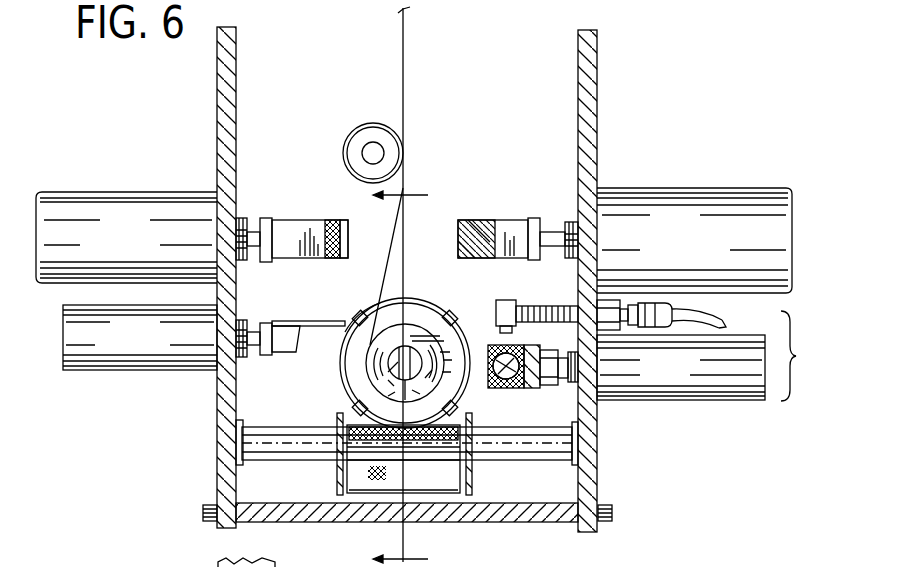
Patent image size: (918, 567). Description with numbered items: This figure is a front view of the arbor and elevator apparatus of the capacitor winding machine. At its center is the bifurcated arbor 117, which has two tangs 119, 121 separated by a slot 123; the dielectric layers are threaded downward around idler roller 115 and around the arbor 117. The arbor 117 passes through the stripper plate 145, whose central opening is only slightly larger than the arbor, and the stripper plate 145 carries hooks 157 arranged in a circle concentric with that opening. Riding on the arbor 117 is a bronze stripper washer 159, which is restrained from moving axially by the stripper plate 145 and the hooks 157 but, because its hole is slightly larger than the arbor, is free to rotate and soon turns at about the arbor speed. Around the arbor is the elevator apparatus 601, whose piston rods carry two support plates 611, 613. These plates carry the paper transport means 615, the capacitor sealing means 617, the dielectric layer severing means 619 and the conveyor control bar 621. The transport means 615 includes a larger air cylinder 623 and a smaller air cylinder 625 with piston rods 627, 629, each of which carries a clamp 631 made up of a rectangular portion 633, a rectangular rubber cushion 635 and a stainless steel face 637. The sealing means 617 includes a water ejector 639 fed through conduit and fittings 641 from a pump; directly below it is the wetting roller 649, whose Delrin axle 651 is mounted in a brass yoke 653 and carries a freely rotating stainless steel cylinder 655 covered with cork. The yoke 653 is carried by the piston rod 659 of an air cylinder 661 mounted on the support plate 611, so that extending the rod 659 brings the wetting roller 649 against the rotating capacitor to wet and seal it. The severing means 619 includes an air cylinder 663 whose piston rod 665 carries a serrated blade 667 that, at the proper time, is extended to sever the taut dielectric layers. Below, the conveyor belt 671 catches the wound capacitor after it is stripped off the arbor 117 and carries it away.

The elevator apparatus 601 is at (664, 120).
The support plate 611 is at (590, 84).
The support plate 613 is at (229, 96).
The paper transport means 615 is at (100, 176).
The capacitor sealing means 617 is at (711, 371).
The dielectric layer severing means 619 is at (54, 347).
The conveyor control bar 621 is at (502, 445).
The air cylinder 623 is at (694, 240).
The air cylinder 625 is at (126, 237).
The piston rod 627 is at (553, 232).
The piston rod 629 is at (246, 217).
The clamp 631 is at (296, 261).
The rectangular portion 633 is at (288, 220).
The rectangular rubber cushion 635 is at (336, 222).
The stainless steel face 637 is at (345, 232).
The water ejector 639 is at (512, 300).
The conduit and fittings 641 is at (720, 316).
The wetting roller 649 is at (488, 400).
The Delrin axle 651 is at (522, 386).
The brass yoke 653 is at (600, 338).
The stainless steel cylinder 655 is at (600, 290).
The piston rod 659 is at (565, 380).
The air cylinder 661 is at (714, 387).
The air cylinder 663 is at (140, 337).
The piston rod 665 is at (257, 357).
The serrated blade 667 is at (313, 322).
The conveyor belt 671 is at (440, 495).
The idler roller 115 is at (360, 135).
The bifurcated arbor 117 is at (372, 369).
The tang 119 is at (418, 356).
The tang 121 is at (392, 404).
The slot 123 is at (405, 348).
The stripper plate 145 is at (460, 322).
The hooks 157 is at (356, 312).
The stripper washer 159 is at (342, 354).